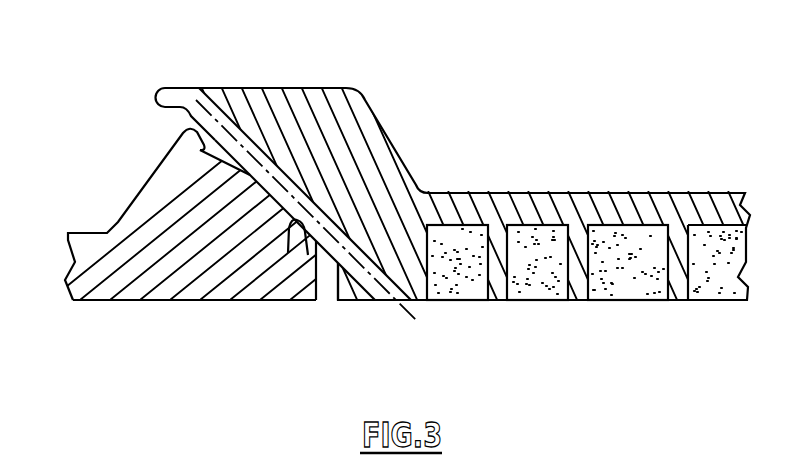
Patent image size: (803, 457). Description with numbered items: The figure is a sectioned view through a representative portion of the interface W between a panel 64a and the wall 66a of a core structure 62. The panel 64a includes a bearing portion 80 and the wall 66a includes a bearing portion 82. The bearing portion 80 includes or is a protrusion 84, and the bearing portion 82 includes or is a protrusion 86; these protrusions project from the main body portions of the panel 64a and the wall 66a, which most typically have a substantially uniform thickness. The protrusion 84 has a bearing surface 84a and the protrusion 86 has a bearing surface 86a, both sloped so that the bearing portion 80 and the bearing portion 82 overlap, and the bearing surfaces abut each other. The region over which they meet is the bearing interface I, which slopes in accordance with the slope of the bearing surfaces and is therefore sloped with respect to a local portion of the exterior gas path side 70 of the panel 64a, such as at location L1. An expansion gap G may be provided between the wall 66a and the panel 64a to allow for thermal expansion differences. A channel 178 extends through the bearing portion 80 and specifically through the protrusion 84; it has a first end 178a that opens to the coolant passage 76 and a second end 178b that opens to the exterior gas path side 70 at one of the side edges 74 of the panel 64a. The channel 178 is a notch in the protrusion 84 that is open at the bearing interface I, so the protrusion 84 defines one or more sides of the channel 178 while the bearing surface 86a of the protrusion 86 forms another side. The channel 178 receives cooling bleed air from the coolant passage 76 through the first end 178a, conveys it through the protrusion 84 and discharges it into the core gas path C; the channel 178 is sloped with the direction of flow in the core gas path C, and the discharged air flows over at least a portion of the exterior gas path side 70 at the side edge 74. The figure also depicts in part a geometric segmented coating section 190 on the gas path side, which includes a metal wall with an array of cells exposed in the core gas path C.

The protrusion 84 is at (332, 68).
The bearing surface 84a is at (191, 126).
The bearing portion 80 is at (337, 138).
The panel 64a is at (527, 212).
The exterior gas path side 70 is at (500, 297).
The location L1 is at (470, 300).
The geometric segmented coating section 190 is at (634, 282).
The side edge 74 is at (363, 308).
The channel 178 is at (240, 137).
The first end 178a is at (180, 107).
The second end 178b is at (378, 292).
The bearing interface I is at (265, 195).
The core structure 62 is at (130, 201).
The protrusion 86 is at (158, 143).
The bearing surface 86a is at (300, 222).
The bearing portion 82 is at (253, 277).
The wall 66a is at (147, 277).
The coolant passage 76 is at (98, 163).
The interface W is at (195, 355).
The expansion gap G is at (328, 301).
The core gas path C is at (384, 364).